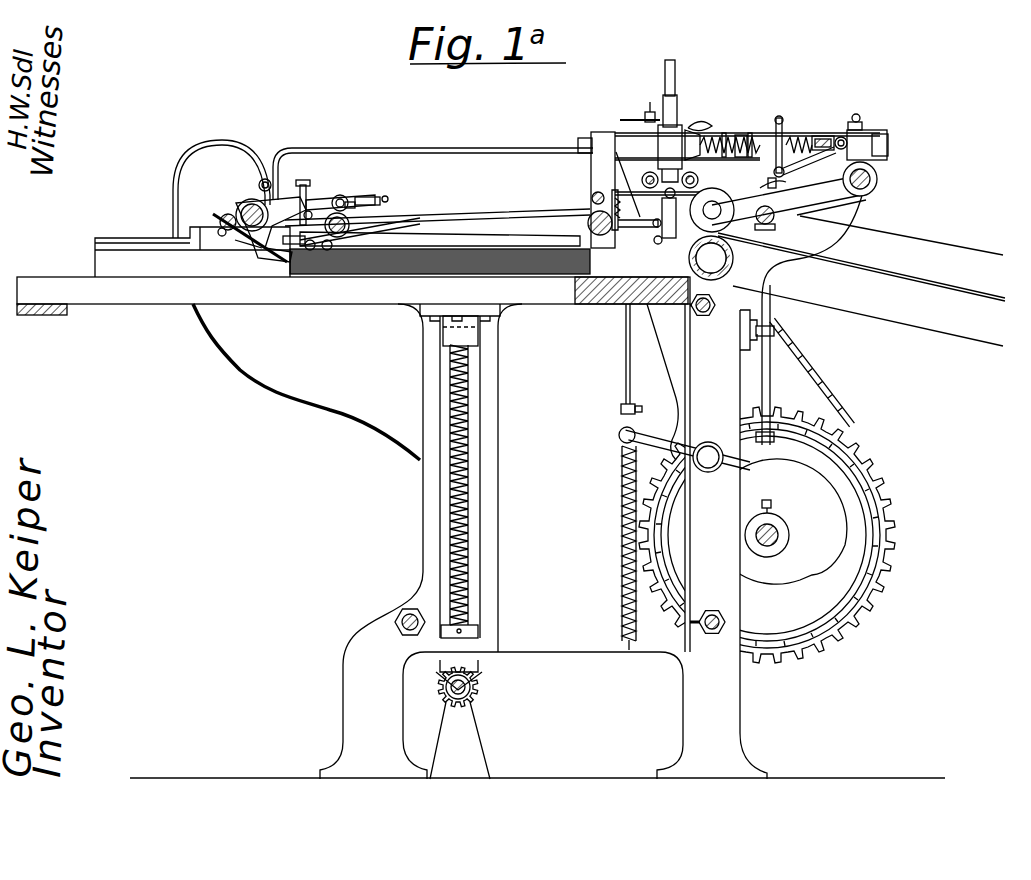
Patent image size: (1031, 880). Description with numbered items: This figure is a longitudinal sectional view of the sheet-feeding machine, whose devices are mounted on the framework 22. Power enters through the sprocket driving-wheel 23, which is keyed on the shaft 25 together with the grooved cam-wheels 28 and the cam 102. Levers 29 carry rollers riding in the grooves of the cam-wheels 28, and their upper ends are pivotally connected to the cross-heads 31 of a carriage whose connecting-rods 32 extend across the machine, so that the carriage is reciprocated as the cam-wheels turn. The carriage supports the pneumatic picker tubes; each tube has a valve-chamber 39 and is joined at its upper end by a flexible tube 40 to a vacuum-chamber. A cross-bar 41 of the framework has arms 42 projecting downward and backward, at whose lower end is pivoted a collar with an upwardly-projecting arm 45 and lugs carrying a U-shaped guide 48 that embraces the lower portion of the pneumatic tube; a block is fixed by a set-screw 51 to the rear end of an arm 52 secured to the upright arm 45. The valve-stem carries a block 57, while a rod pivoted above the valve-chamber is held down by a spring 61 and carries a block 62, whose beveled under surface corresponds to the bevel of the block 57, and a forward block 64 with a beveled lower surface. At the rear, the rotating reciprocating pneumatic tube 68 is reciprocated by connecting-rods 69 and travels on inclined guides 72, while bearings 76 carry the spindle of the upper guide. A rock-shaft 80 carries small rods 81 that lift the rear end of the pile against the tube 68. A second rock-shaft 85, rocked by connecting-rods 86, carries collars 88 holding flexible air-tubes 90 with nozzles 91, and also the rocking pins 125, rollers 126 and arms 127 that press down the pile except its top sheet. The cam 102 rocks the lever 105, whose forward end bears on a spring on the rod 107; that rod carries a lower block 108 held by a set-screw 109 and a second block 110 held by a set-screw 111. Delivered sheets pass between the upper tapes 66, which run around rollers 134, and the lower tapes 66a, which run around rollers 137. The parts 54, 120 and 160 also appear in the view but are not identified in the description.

The framework 22 is at (490, 411).
The sprocket driving-wheel 23 is at (882, 484).
The shaft 25 is at (767, 548).
The cam-wheels 28 is at (767, 535).
The levers 29 is at (666, 360).
The cross-heads 31 is at (645, 142).
The connecting-rods 32 is at (640, 180).
The valve-chamber 39 is at (670, 153).
The flexible tubes 40 is at (677, 68).
The cross-bar 41 is at (826, 134).
The arms 42 is at (808, 161).
The upwardly-projecting arm 45 is at (782, 116).
The U-shaped guide 48 is at (760, 188).
The set-screw 51 is at (650, 108).
The arm 52 is at (742, 130).
The plate 54 is at (376, 262).
The block 57 is at (740, 146).
The spring 61 is at (692, 126).
The block 62 is at (778, 124).
The block 64 is at (862, 128).
The upper tapes 66 is at (858, 231).
The lower tapes 66a is at (868, 316).
The rotating reciprocating pneumatic tube 68 is at (396, 219).
The connecting-rods 69 is at (482, 216).
The inclined guides 72 is at (400, 245).
The bearings 76 is at (362, 195).
The rock-shaft 80 is at (222, 220).
The small rods 81 is at (245, 240).
The rock-shaft 85 is at (240, 205).
The connecting-rods 86 is at (433, 165).
The collars 88 is at (255, 200).
The air-tubes 90 is at (190, 162).
The nozzles 91 is at (285, 244).
The cam 102 is at (777, 521).
The lever 105 is at (724, 442).
The rod 107 is at (624, 367).
The block 108 is at (620, 548).
The set-screw 109 is at (629, 592).
The second block 110 is at (620, 410).
The set-screw 111 is at (641, 408).
The block 120 is at (644, 219).
The rocking pins 125 is at (336, 198).
The rollers 126 is at (312, 252).
The arms 127 is at (302, 194).
The rollers 134 is at (722, 224).
The rollers 137 is at (726, 264).
The pin 160 is at (587, 222).